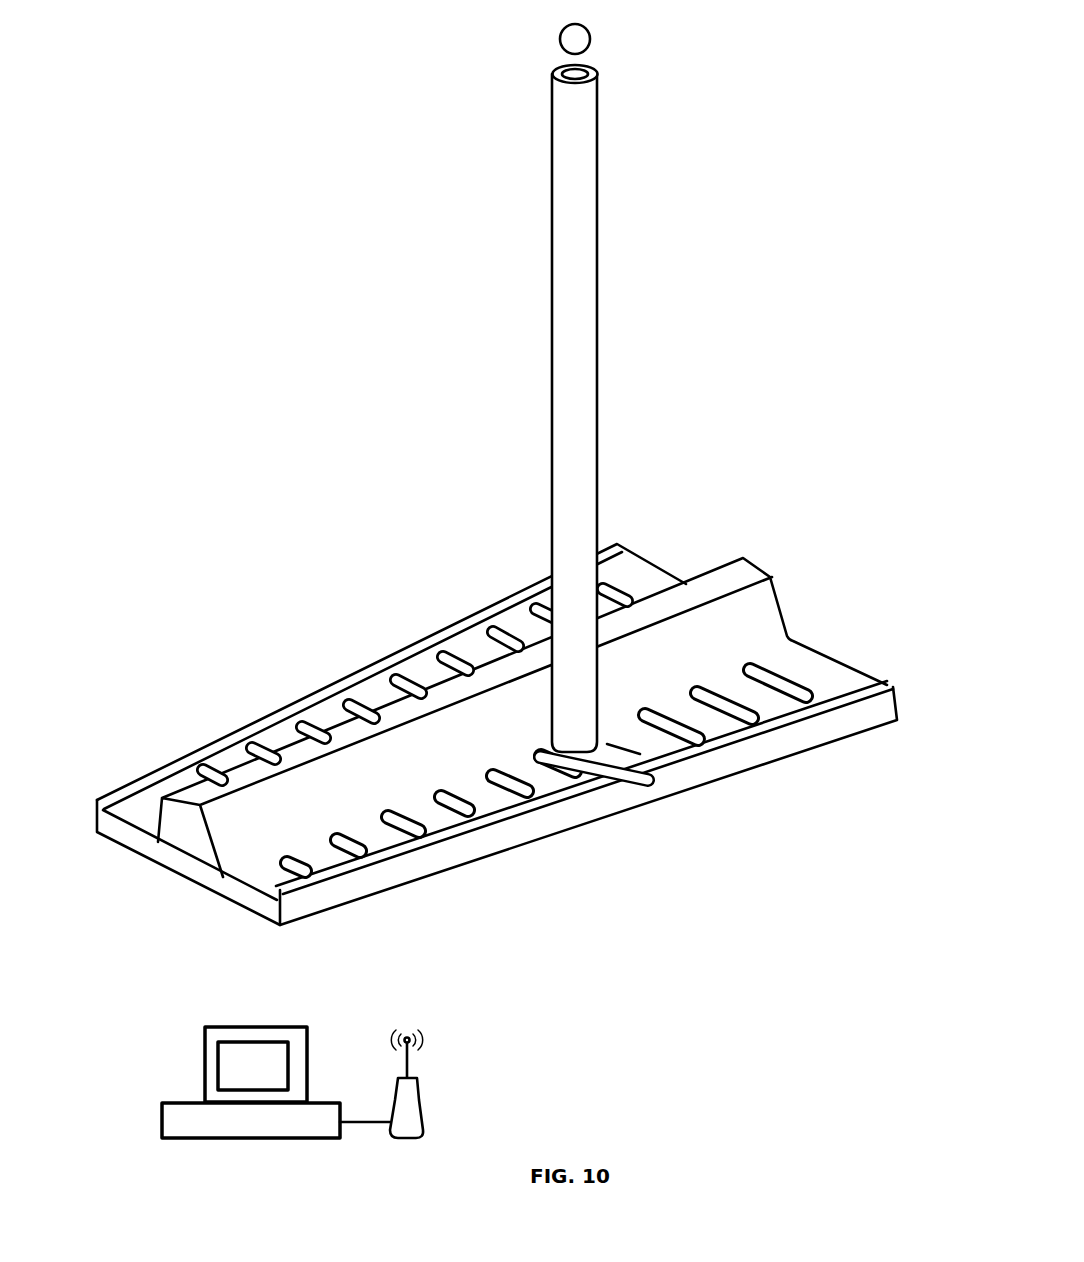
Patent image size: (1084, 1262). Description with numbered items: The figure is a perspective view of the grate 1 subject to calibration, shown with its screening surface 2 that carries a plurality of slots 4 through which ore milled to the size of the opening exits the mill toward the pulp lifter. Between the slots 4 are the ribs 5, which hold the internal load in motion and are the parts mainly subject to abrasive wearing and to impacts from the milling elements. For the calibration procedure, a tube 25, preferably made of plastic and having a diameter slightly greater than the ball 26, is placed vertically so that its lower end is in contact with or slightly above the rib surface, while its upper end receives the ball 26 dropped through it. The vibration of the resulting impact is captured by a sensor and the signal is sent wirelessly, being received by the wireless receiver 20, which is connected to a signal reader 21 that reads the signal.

The grate 1 is at (330, 692).
The screening surface 2 is at (628, 582).
The slots 4 is at (658, 766).
The ribs 5 is at (556, 792).
The wireless receiver 20 is at (417, 1093).
The signal reader 21 is at (213, 1075).
The tube 25 is at (573, 330).
The ball 26 is at (559, 38).